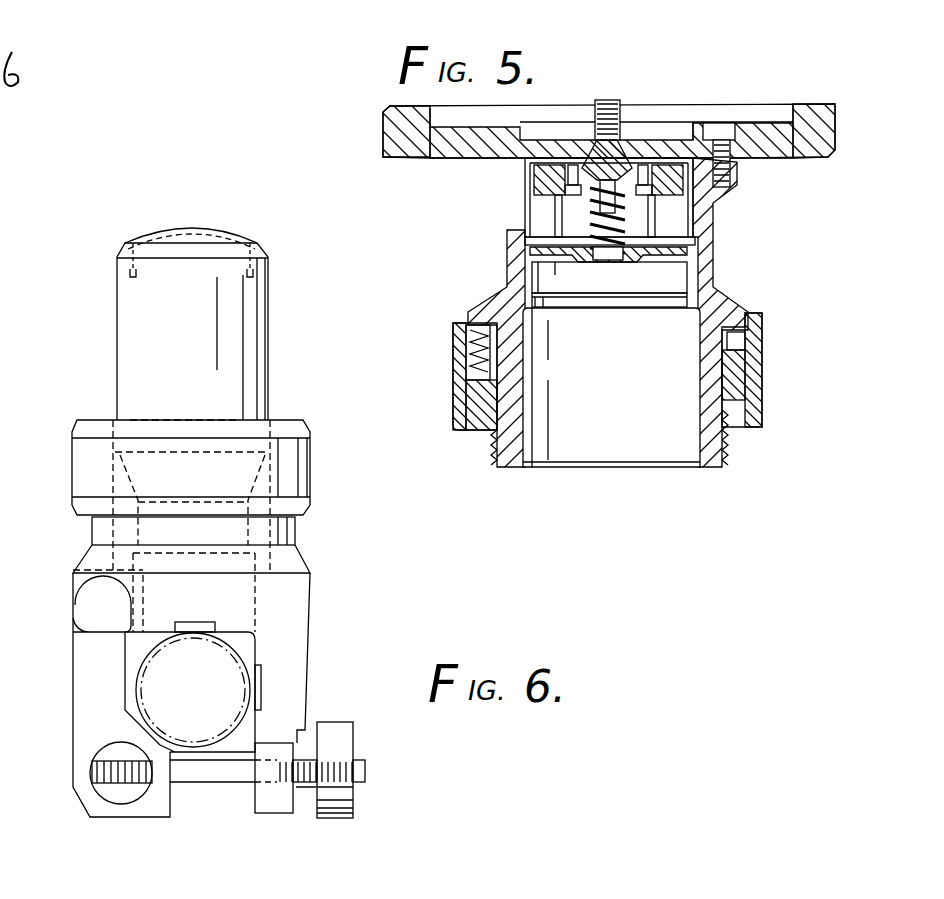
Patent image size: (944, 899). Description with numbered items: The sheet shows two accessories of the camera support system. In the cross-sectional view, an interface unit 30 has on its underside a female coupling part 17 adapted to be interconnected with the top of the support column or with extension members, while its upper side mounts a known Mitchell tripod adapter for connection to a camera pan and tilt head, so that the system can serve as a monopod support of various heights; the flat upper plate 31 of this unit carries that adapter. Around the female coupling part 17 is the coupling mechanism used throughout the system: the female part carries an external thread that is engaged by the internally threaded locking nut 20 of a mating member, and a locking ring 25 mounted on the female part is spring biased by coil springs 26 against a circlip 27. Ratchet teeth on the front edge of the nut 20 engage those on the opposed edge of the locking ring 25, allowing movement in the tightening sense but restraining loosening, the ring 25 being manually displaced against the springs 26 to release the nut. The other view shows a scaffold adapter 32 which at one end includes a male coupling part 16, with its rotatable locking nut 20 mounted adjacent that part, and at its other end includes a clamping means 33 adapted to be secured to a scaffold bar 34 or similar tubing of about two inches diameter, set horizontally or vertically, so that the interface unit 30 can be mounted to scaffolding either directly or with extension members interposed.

In FIG. 6, the male coupling part 16 is at (240, 358).
In FIG. 5, the female coupling part 17 is at (640, 445).
In FIG. 6, the locking nut 20 is at (300, 440).
In FIG. 5, the locking ring 25 is at (762, 365).
In FIG. 5, the coil springs 26 is at (466, 330).
In FIG. 5, the circlip 27 is at (720, 420).
In FIG. 5, the interface unit 30 is at (758, 298).
In FIG. 5, the flange 31 is at (818, 140).
In FIG. 6, the scaffold adapter 32 is at (330, 606).
In FIG. 6, the clamping means 33 is at (298, 715).
In FIG. 6, the scaffold bar 34 is at (160, 691).